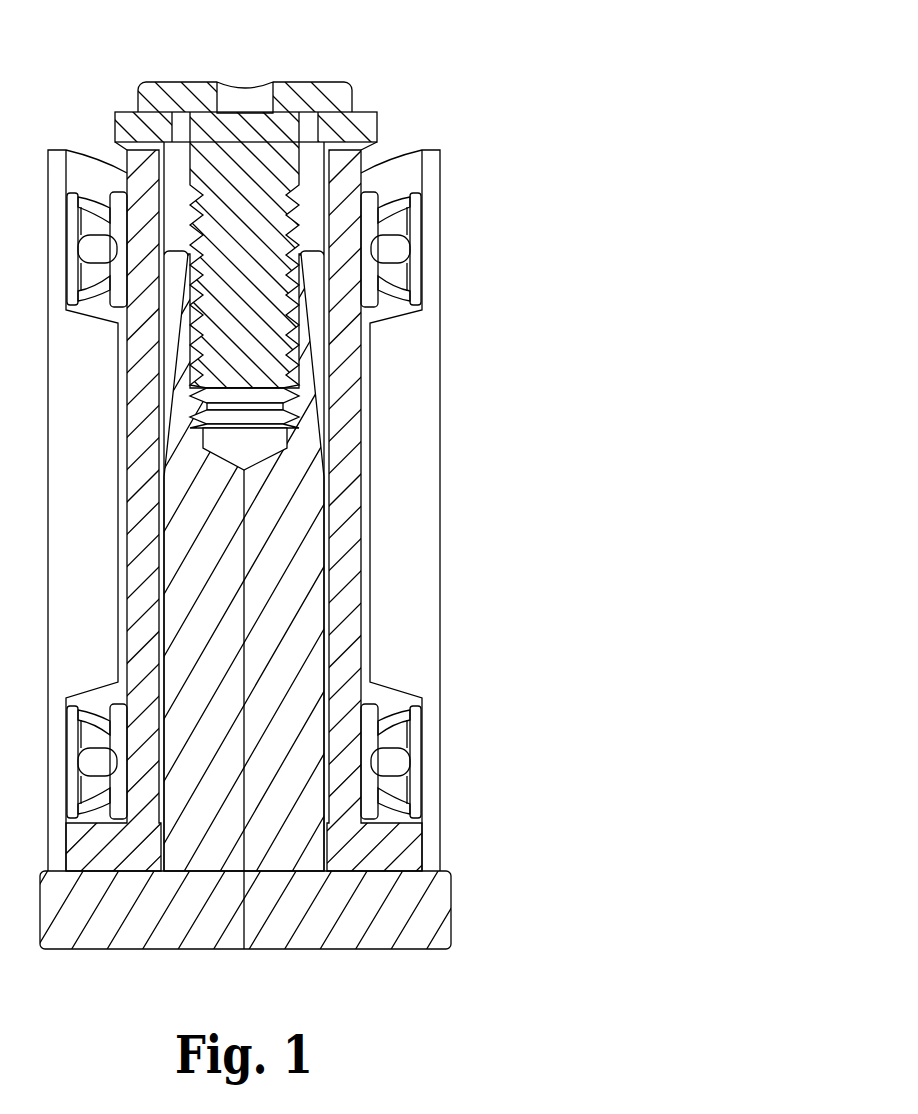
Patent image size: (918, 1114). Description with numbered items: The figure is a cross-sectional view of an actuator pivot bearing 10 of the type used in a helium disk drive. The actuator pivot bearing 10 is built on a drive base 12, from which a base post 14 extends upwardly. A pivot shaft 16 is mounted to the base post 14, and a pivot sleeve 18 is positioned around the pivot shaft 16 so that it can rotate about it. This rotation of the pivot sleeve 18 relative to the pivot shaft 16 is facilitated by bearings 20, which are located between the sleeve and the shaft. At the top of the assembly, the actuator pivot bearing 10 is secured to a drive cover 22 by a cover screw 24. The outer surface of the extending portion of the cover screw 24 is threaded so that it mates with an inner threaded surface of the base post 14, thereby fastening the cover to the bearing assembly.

The actuator pivot bearing 10 is at (493, 123).
The drive base 12 is at (422, 912).
The base post 14 is at (288, 687).
The pivot shaft 16 is at (343, 413).
The pivot sleeve 18 is at (413, 513).
The bearings 20 is at (413, 742).
The drive cover 22 is at (351, 127).
The cover screw 24 is at (158, 90).